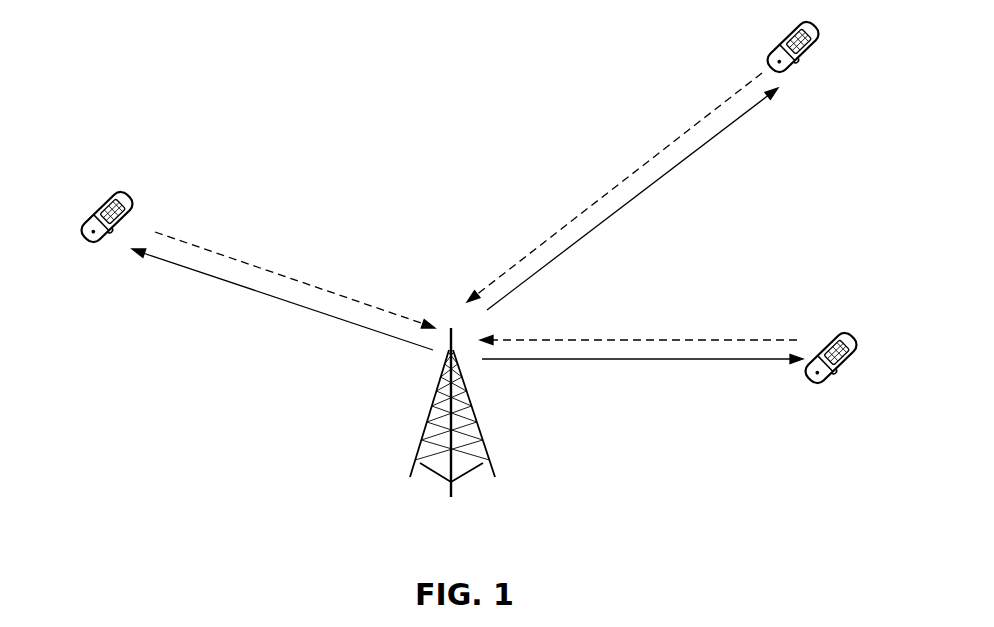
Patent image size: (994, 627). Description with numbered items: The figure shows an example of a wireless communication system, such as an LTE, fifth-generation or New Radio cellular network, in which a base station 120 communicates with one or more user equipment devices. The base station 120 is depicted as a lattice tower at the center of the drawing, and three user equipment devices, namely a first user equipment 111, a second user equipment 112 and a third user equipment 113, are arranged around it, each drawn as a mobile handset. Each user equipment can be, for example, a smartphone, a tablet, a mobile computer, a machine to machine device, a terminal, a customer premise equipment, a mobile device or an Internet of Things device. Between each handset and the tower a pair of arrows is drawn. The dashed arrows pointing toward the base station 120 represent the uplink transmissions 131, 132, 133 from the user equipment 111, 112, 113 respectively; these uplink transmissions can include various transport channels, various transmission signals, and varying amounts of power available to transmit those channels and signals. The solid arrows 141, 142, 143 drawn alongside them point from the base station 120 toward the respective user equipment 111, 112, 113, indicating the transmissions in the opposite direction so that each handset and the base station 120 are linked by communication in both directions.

The user equipment 111 is at (96, 200).
The user equipment 112 is at (865, 363).
The user equipment 113 is at (828, 53).
The base station 120 is at (503, 483).
The uplink transmission 131 is at (312, 273).
The uplink transmission 132 is at (652, 327).
The uplink transmission 133 is at (615, 177).
The downlink / solid communication link to UE 111 141 is at (293, 305).
The downlink / solid communication link to UE 112 142 is at (703, 362).
The downlink / solid communication link to UE 113 143 is at (713, 137).